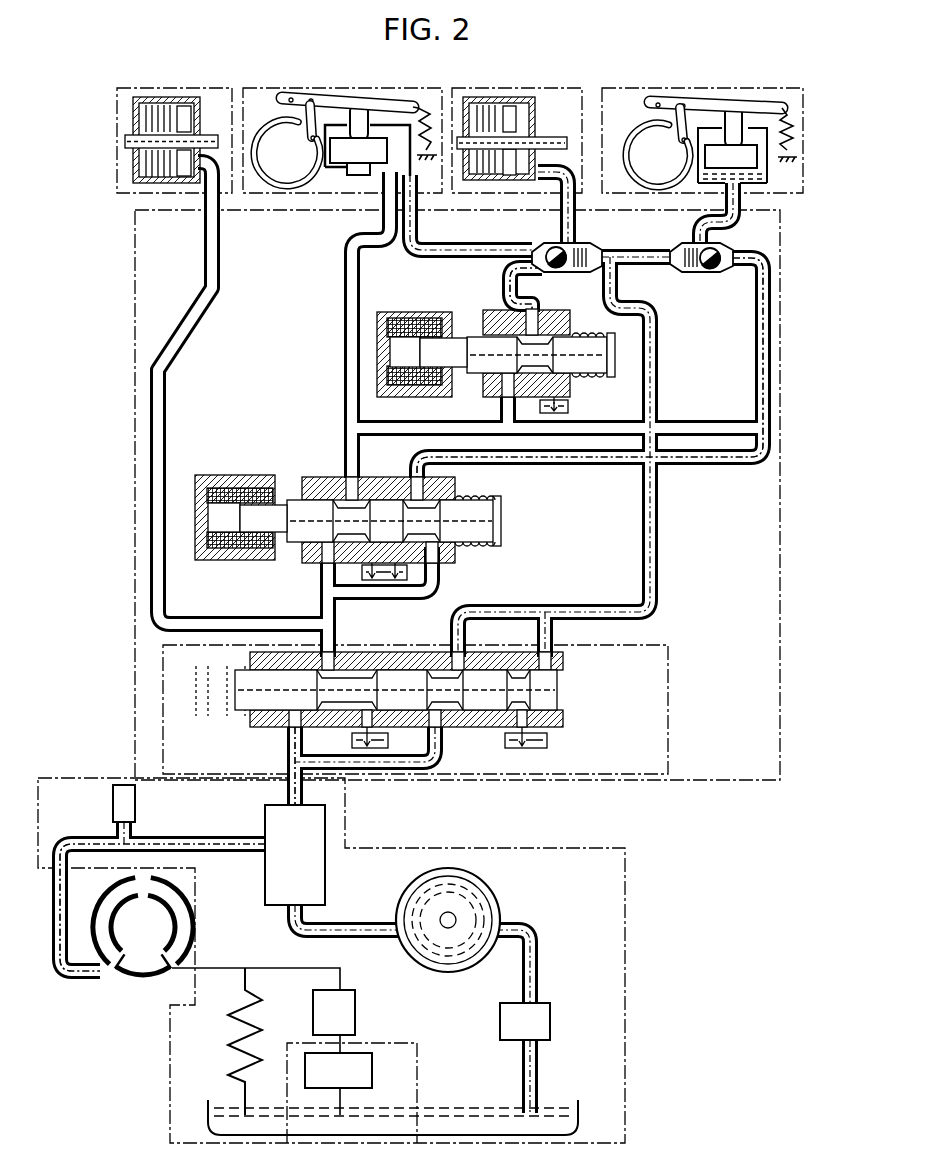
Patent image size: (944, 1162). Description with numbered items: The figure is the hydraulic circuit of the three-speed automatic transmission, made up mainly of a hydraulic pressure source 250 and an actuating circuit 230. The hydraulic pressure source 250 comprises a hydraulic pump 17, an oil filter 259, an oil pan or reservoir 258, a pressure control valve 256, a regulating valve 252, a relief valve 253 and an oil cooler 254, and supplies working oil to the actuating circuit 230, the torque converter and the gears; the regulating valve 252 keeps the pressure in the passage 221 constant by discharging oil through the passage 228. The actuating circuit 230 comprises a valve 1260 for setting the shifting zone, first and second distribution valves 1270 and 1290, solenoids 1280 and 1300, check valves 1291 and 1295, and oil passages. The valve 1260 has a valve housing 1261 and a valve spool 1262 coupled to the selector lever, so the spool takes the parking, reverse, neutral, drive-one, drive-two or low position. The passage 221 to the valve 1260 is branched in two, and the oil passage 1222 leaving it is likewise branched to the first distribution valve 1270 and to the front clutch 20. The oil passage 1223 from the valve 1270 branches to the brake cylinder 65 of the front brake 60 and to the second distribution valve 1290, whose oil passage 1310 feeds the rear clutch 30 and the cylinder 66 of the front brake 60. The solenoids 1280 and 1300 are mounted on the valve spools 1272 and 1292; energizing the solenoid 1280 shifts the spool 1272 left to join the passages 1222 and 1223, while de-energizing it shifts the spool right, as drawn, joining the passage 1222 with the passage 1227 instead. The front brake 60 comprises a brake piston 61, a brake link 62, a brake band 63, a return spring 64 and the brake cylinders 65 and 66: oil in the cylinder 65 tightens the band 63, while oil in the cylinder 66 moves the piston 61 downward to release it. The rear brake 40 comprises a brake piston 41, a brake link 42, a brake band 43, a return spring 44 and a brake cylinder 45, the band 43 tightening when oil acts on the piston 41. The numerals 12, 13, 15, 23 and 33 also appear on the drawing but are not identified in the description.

The torque converter 12 is at (188, 926).
The impeller 13 is at (113, 897).
The turbine 15 is at (148, 978).
The hydraulic pump 17 is at (497, 898).
The front clutch 20 is at (117, 183).
The clutch 23 is at (198, 107).
The rear clutch 30 is at (537, 88).
The clutch 33 is at (532, 107).
The rear brake 40 is at (663, 88).
The brake piston 41 is at (755, 158).
The brake link 42 is at (711, 103).
The brake band 43 is at (634, 148).
The return spring 44 is at (787, 115).
The brake cylinder 45 is at (753, 182).
The front brake 60 is at (262, 88).
The brake piston 61 is at (335, 155).
The brake link 62 is at (346, 100).
The brake band 63 is at (268, 186).
The return spring 64 is at (430, 105).
The brake cylinder 65 is at (343, 170).
The brake cylinder 66 is at (382, 126).
The oil passage 221 is at (288, 793).
The oil passage 228 is at (47, 960).
The actuating circuit 230 is at (687, 780).
The hydraulic pressure source 250 is at (78, 778).
The regulating valve 252 is at (265, 822).
The relief valve 253 is at (113, 810).
The oil cooler 254 is at (230, 1040).
The pressure control valve 256 is at (355, 1012).
The oil pan or reservoir 258 is at (578, 1094).
The oil filter 259 is at (553, 1012).
The oil passage 1222 is at (336, 613).
The oil passage 1223 is at (350, 408).
The oil passage 1227 is at (553, 461).
The valve for setting the shifting zone 1260 is at (565, 722).
The valve housing 1261 is at (455, 728).
The valve spool 1262 is at (547, 692).
The first distribution valve 1270 is at (453, 556).
The valve spool 1272 is at (500, 518).
The solenoid 1280 is at (231, 475).
The second distribution valve 1290 is at (572, 395).
The check valve 1291 is at (548, 247).
The valve spool 1292 is at (613, 350).
The check valve 1295 is at (712, 272).
The solenoid 1300 is at (416, 312).
The oil passage 1310 is at (532, 300).